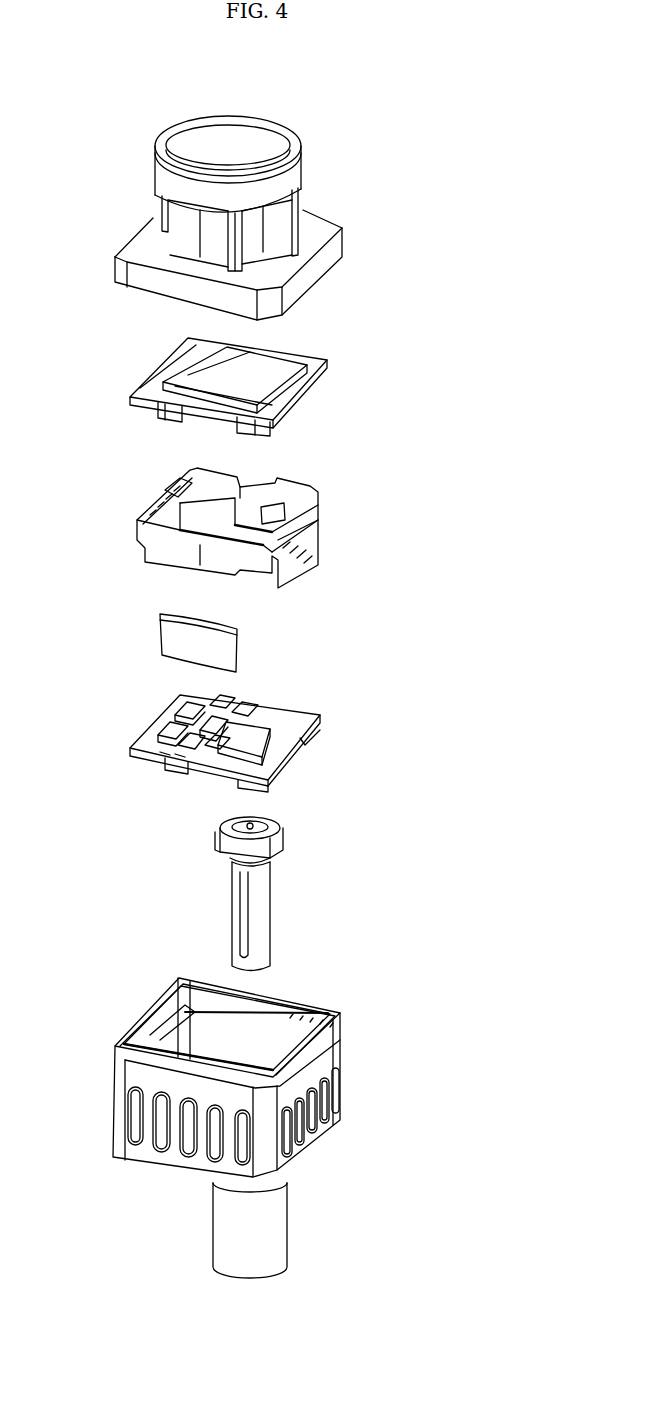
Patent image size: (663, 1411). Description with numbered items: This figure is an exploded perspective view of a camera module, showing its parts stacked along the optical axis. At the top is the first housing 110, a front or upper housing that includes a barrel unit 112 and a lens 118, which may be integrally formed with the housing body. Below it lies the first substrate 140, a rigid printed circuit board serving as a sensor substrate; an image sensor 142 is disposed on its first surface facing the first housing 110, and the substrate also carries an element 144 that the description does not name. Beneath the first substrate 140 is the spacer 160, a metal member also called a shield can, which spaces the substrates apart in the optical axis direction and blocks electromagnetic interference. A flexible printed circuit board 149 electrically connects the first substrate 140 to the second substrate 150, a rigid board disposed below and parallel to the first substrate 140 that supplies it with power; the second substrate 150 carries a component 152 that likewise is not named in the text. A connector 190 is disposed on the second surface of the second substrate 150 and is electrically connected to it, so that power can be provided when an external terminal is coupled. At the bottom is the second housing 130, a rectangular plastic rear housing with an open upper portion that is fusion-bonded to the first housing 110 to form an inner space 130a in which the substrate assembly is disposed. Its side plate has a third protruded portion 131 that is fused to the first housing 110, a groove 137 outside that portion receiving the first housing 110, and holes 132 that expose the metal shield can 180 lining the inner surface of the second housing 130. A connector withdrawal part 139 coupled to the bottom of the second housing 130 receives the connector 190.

The first housing 110 is at (340, 247).
The barrel unit 112 is at (297, 180).
The lens 118 is at (233, 138).
The first substrate 140 is at (323, 382).
The image sensor 142 is at (237, 367).
The contact tabs 144 is at (177, 413).
The spacer 160 is at (330, 508).
The flexible printed circuit board 149 is at (170, 643).
The second substrate 150 is at (320, 723).
The electronic component 152 is at (247, 737).
The connector 190 is at (263, 905).
The second housing 130 is at (338, 1040).
The space 130a is at (212, 1028).
The third protruded portion 131 is at (302, 1000).
The groove 137 is at (333, 1017).
The shield can 180 is at (172, 1038).
The hole 132 is at (138, 1123).
The connector withdrawal part 139 is at (280, 1222).